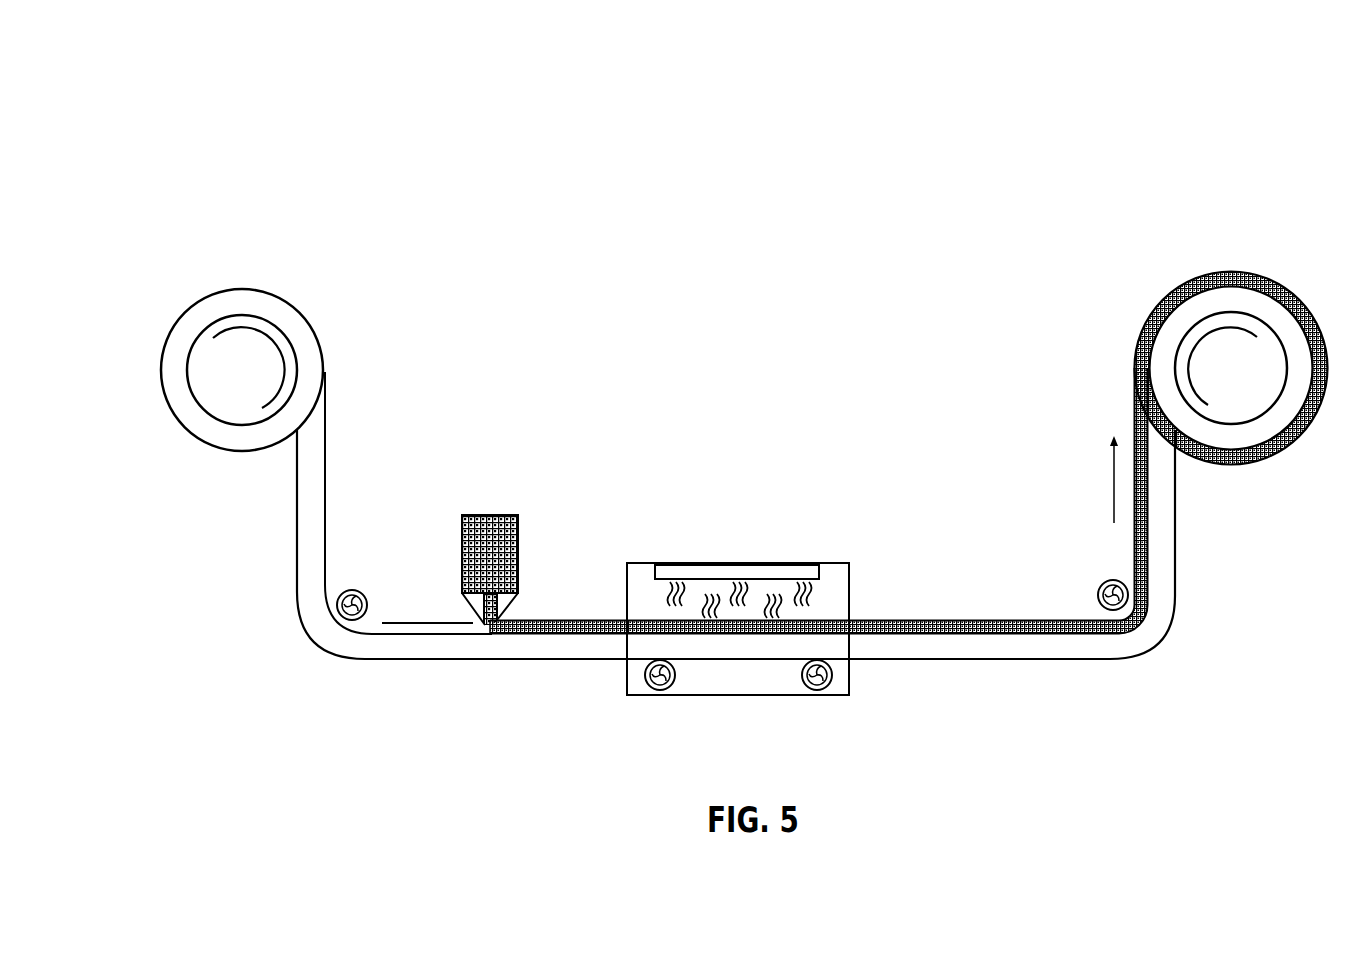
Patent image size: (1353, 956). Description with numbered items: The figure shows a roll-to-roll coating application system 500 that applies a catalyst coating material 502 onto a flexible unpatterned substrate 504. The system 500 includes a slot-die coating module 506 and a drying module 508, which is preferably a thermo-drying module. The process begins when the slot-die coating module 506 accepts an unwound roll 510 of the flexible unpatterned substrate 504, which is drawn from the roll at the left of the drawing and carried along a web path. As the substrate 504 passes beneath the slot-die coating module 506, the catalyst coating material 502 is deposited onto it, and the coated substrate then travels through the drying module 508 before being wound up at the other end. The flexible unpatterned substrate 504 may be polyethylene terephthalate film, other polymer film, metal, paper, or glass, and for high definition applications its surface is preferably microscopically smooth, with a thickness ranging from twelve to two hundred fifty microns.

The coating application system 500 is at (275, 163).
The catalyst coating material 502 is at (572, 618).
The flexible unpatterned substrate 504 is at (310, 448).
The slot-die coating module 506 is at (478, 518).
The drying module 508 is at (838, 582).
The unwound roll 510 is at (223, 312).